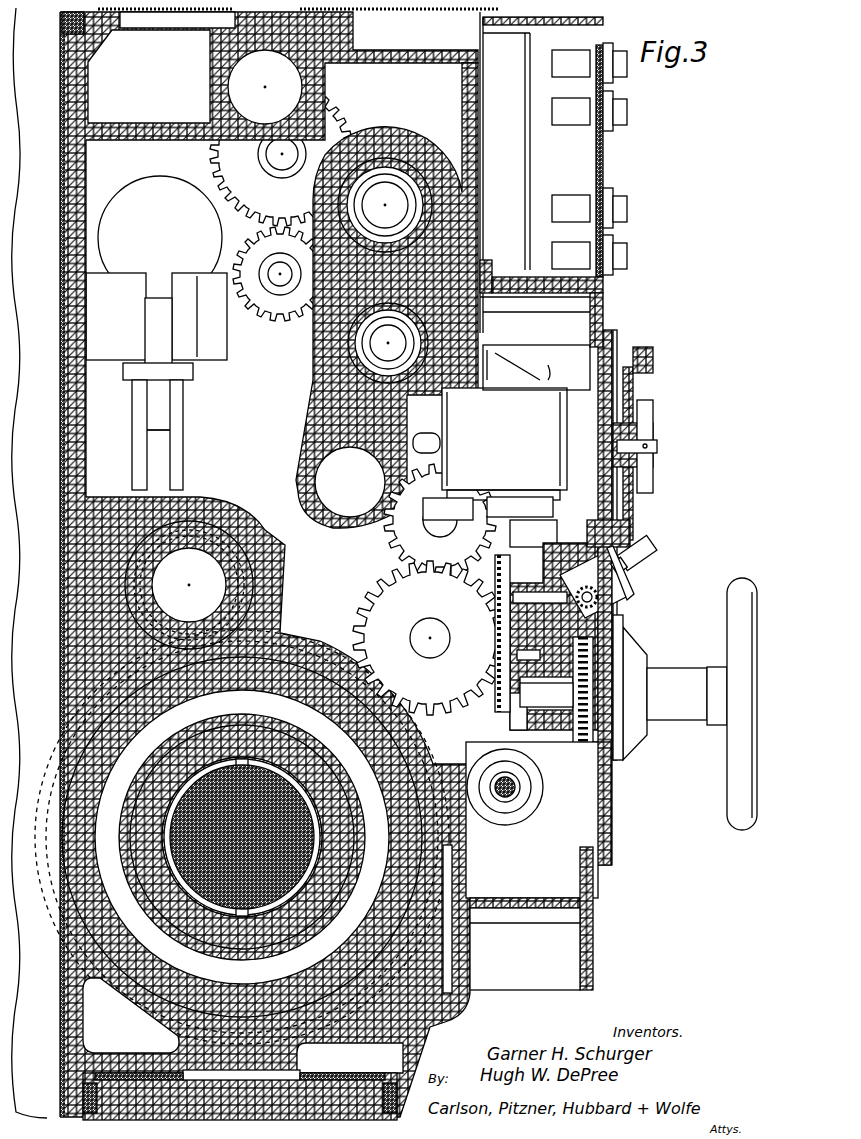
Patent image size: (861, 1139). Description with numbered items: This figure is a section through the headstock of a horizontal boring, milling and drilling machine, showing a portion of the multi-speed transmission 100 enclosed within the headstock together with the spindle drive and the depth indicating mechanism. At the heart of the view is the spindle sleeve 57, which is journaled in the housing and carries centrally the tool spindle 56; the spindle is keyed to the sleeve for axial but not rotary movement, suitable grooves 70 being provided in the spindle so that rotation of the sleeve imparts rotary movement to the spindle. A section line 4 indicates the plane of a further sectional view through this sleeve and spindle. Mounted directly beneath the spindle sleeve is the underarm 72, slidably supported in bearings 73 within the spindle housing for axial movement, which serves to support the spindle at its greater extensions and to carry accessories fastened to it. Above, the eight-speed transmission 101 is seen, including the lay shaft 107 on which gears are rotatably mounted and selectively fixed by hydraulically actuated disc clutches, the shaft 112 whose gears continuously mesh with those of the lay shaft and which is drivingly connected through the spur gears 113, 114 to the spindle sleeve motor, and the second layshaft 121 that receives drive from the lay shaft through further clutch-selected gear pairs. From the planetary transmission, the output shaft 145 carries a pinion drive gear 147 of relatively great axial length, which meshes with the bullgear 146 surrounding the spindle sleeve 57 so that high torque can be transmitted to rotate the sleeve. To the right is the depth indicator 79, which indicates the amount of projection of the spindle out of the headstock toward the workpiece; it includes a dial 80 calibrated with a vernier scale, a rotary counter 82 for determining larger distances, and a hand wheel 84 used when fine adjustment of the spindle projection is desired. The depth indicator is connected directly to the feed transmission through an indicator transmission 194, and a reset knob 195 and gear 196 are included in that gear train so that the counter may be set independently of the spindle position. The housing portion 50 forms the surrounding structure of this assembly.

The section line 4- 4 is at (220, 700).
The housing 50 is at (598, 944).
The tool spindle 56 is at (200, 882).
The spindle sleeve 57 is at (157, 786).
The grooves 70 is at (296, 742).
The underarm 72 is at (327, 1094).
The bearings 73 is at (356, 1078).
The depth indicator 79 is at (646, 635).
The dial 80 is at (632, 660).
The rotary counter 82 is at (617, 592).
The hand wheel 84 is at (728, 815).
The multi-speed transmission 100 is at (106, 446).
The eight-speed transmission 101 is at (196, 157).
The lay shaft 107 is at (387, 198).
The shaft 112 is at (283, 165).
The spur gear 113 is at (235, 178).
The spur gear 114 is at (272, 312).
The second layshaft 121 is at (398, 330).
The output shaft 145 is at (212, 593).
The bullgear 146 is at (315, 640).
The pinion drive gear 147 is at (248, 566).
The indicator transmission 194 is at (489, 698).
The reset knob 195 is at (637, 552).
The gear 196 is at (624, 600).